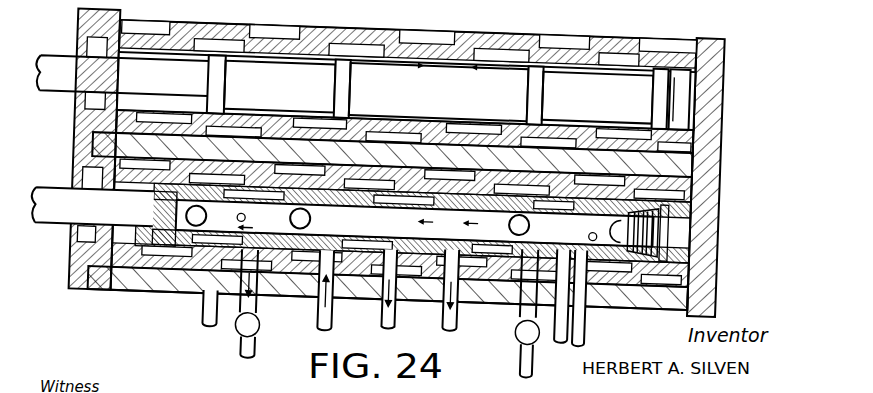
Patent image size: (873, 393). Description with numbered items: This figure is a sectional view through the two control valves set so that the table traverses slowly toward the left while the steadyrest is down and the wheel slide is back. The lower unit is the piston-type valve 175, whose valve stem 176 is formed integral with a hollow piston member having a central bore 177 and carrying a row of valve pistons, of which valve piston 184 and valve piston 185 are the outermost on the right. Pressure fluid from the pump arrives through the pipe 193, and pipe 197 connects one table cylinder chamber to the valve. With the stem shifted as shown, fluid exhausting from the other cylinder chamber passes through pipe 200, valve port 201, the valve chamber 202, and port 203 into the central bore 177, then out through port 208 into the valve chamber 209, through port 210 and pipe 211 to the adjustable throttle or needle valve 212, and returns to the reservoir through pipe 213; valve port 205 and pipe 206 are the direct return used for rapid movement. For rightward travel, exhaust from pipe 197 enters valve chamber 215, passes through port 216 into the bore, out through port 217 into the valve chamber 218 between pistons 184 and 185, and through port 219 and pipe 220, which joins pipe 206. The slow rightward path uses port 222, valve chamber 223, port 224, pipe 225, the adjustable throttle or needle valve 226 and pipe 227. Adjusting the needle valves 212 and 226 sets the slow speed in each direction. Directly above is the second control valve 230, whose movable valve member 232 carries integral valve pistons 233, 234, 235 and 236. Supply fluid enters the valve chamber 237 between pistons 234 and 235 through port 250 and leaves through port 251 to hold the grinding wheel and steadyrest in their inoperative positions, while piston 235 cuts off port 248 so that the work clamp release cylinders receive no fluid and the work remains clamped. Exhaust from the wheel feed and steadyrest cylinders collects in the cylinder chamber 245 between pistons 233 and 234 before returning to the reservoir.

The valve 175 is at (734, 214).
The valve stem 176 is at (49, 189).
The central bore 177 is at (415, 223).
The valve piston 184 is at (592, 325).
The valve piston 185 is at (685, 258).
The pipe 193 is at (402, 318).
The pipe 197 is at (466, 318).
The pipe 200 is at (340, 318).
The valve port 201 is at (346, 289).
The valve chamber 202 is at (272, 314).
The port 203 is at (322, 214).
The valve port 205 is at (197, 288).
The pipe 206 is at (212, 316).
The port 208 is at (252, 213).
The valve chamber 209 is at (228, 232).
The port 210 is at (266, 285).
The pipe 211 is at (246, 311).
The adjustable throttle or needle valve 212 is at (255, 330).
The pipe 213 is at (270, 354).
The valve chamber 215 is at (486, 228).
The port 216 is at (538, 224).
The port 217 is at (596, 213).
The valve chamber 218 is at (640, 292).
The port 219 is at (568, 324).
The pipe 220 is at (592, 328).
The port 222 is at (597, 220).
The valve chamber 223 is at (594, 314).
The port 224 is at (528, 282).
The pipe 225 is at (552, 333).
The adjustable throttle or needle valve 226 is at (534, 322).
The pipe 227 is at (542, 342).
The second control valve 230 is at (733, 78).
The movable valve member 232 is at (55, 60).
The valve piston 233 is at (226, 79).
The valve piston 234 is at (361, 79).
The valve piston 235 is at (546, 80).
The valve piston 236 is at (642, 90).
The valve chamber 237 is at (436, 46).
The cylinder chamber 245 is at (265, 22).
The port 248 is at (553, 46).
The port 250 is at (405, 46).
The port 251 is at (487, 48).